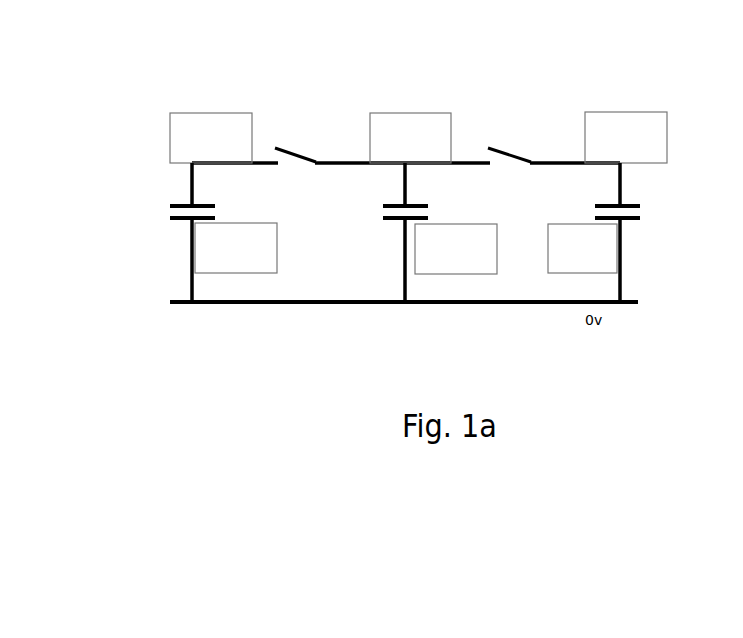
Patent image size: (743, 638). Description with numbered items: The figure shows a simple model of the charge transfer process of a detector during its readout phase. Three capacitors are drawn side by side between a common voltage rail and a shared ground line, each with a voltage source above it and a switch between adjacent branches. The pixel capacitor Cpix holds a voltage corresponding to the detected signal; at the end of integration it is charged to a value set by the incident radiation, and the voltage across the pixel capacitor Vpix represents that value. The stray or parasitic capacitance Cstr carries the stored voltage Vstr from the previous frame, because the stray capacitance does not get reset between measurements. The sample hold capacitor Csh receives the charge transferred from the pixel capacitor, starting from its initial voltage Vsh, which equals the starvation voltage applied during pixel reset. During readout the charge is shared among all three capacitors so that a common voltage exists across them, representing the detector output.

The voltage across the pixel capacitor Vpix is at (211, 138).
The pixel capacitor Cpix is at (223, 232).
The stored voltage across the stray capacitance Vstr is at (410, 138).
The stray or parasitic capacitance Cstr is at (440, 232).
The initial voltage of the sample hold capacitor Vsh is at (626, 137).
The sample hold capacitor Csh is at (594, 232).